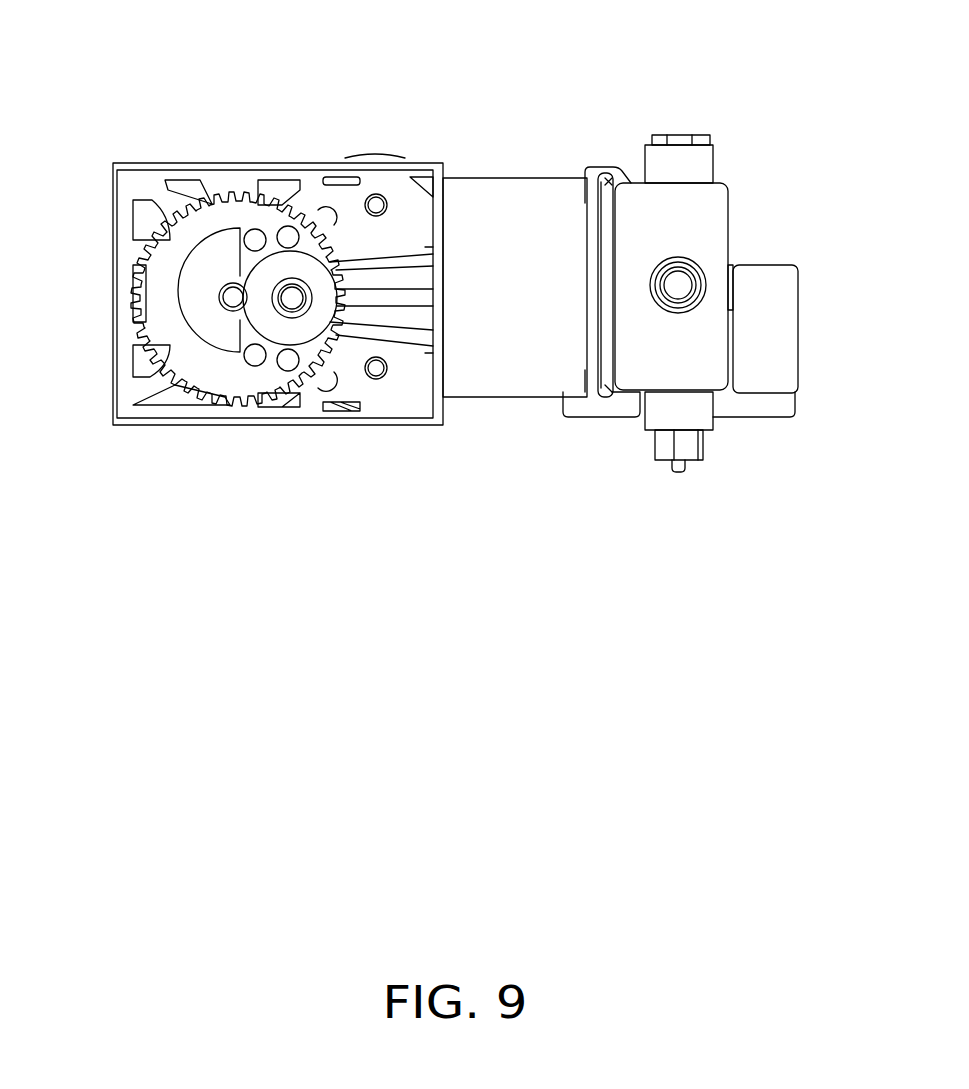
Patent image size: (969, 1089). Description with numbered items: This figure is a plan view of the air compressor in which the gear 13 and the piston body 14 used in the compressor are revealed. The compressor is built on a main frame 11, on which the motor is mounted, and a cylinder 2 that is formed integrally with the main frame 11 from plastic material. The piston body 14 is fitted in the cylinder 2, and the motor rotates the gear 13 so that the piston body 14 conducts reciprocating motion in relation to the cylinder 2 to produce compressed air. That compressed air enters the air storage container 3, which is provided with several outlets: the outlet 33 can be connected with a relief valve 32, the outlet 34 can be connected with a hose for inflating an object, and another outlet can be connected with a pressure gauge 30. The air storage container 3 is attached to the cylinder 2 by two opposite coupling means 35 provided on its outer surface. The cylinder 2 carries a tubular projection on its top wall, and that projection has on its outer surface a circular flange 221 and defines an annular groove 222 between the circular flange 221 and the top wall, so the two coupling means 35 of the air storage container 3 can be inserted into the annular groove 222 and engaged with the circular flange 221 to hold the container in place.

The cylinder 2 is at (495, 213).
The air storage container 3 is at (697, 210).
The main frame 11 is at (140, 383).
The gear 13 is at (232, 212).
The piston body 14 is at (382, 283).
The pressure gauge 30 is at (777, 350).
The relief valve 32 is at (690, 450).
The outlet 33 is at (660, 412).
The outlet 34 is at (705, 275).
The coupling means 35 is at (595, 170).
The circular flange 221 is at (618, 173).
The annular groove 222 is at (592, 193).